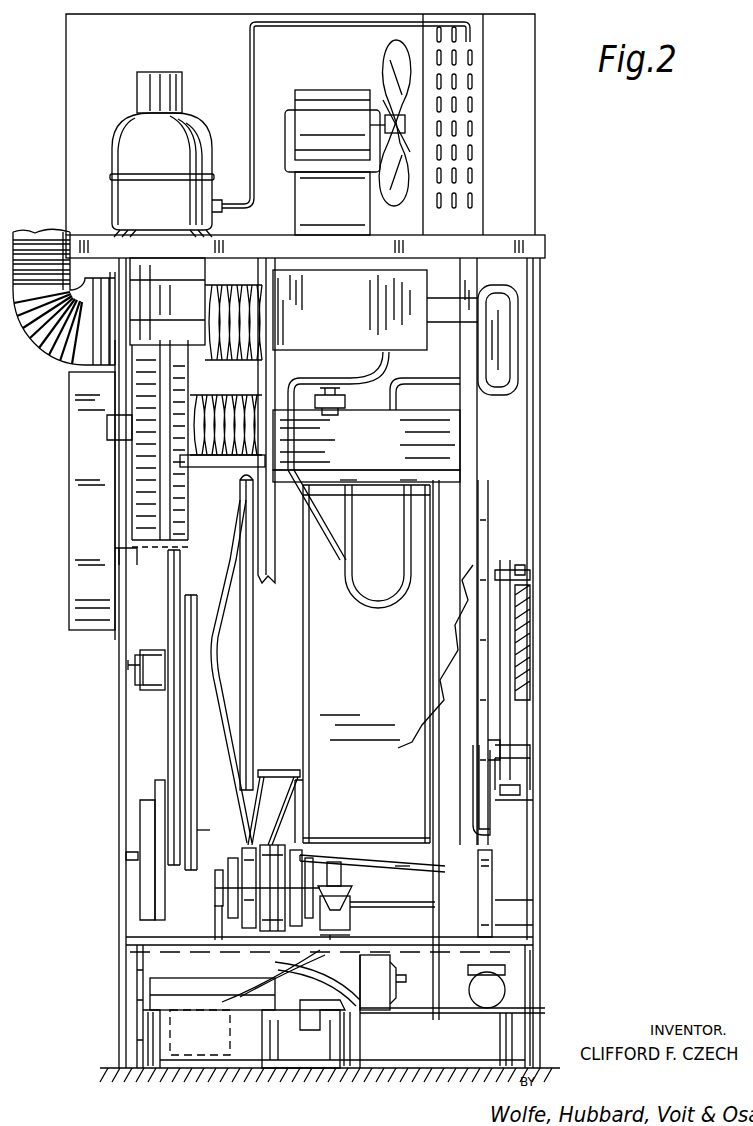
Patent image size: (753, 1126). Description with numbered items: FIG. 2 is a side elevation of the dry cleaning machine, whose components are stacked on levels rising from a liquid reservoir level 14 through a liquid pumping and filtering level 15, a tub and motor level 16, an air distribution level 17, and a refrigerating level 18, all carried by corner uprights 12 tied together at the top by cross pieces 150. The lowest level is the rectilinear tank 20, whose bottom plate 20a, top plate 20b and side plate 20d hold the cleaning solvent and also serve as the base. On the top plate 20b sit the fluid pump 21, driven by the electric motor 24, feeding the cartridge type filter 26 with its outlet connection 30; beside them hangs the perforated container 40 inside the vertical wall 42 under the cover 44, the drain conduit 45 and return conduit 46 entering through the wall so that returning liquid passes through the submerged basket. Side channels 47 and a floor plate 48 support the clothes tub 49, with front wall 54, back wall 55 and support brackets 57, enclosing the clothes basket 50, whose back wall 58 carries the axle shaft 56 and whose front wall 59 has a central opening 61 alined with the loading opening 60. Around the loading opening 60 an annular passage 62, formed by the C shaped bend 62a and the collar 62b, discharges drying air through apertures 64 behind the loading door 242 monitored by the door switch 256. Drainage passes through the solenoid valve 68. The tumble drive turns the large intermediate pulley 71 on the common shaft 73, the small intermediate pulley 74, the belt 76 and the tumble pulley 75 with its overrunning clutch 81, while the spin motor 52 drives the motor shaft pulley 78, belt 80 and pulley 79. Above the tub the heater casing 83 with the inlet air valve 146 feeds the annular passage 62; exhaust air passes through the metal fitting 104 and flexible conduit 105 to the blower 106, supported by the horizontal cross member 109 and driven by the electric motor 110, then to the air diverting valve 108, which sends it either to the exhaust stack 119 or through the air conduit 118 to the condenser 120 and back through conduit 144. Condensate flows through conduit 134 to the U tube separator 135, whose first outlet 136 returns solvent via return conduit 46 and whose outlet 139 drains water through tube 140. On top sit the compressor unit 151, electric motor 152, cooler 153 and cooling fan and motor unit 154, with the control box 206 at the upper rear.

The corner uprights 12 is at (119, 995).
The liquid reservoir level 14 is at (541, 1030).
The liquid pumping and filtering level 15 is at (541, 962).
The tub and motor level 16 is at (541, 690).
The air distribution level 17 is at (541, 372).
The refrigerating level 18 is at (541, 130).
The tank 20 is at (422, 1056).
The bottom plate 20a is at (300, 1068).
The top plate 20b is at (334, 1036).
The reservoir side plate 20d is at (150, 1040).
The fluid pump 21 is at (468, 975).
The electric motor 24 is at (478, 1008).
The cartridge type filter 26 is at (408, 962).
The outlet connection 30 is at (395, 1000).
The perforated open top container 40 is at (300, 1040).
The vertical wall 42 is at (150, 1000).
The cover 44 is at (150, 972).
The drain conduit 45 is at (330, 992).
The return conduit 46 is at (309, 635).
The side channels 47 is at (540, 890).
The floor plate 48 is at (540, 925).
The clothes tub 49 is at (380, 870).
The clothes basket 50 is at (345, 838).
The spin motor 52 is at (244, 852).
The front wall 54 is at (540, 806).
The back wall 55 is at (270, 777).
The axle shaft 56 is at (128, 670).
The support brackets 57 is at (492, 880).
The back wall 58 is at (298, 800).
The front wall 59 is at (470, 800).
The loading opening 60 is at (488, 745).
The central opening 61 is at (440, 768).
The annular passage 62 is at (505, 580).
The C shaped bend 62a is at (470, 745).
The collar 62b is at (587, 800).
The apertures 64 is at (478, 658).
The solenoid valve 68 is at (352, 922).
The large intermediate pulley 71 is at (155, 800).
The common shaft 73 is at (126, 857).
The small intermediate pulley 74 is at (192, 835).
The tumble pulley 75 is at (168, 700).
The belt 76 is at (185, 765).
The motor shaft pulley 78 is at (222, 905).
The pulley 79 is at (215, 700).
The belt 80 is at (240, 760).
The overrunning clutch 81 is at (150, 650).
The casing 83 is at (384, 446).
The metal fitting 104 is at (200, 468).
The flexible conduit 105 is at (225, 388).
The blower 106 is at (115, 470).
The air diverting valve 108 is at (97, 290).
The horizontal cross member 109 is at (115, 553).
The electric motor 110 is at (200, 268).
The air conduit 118 is at (240, 362).
The exhaust stack 119 is at (60, 340).
The condenser 120 is at (366, 322).
The conduit 134 is at (388, 350).
The U tube separator 135 is at (412, 505).
The first outlet 136 is at (352, 505).
The outlet 139 is at (404, 528).
The tube 140 is at (433, 610).
The conduit 144 is at (518, 320).
The inlet air valve 146 is at (352, 392).
The cross pieces 150 is at (520, 237).
The compressor unit 151 is at (112, 165).
The electric motor 152 is at (137, 92).
The cooler 153 is at (485, 115).
The cooling fan and motor unit 154 is at (338, 88).
The control box 206 is at (69, 460).
The loading door 242 is at (530, 628).
The door switch 256 is at (522, 585).